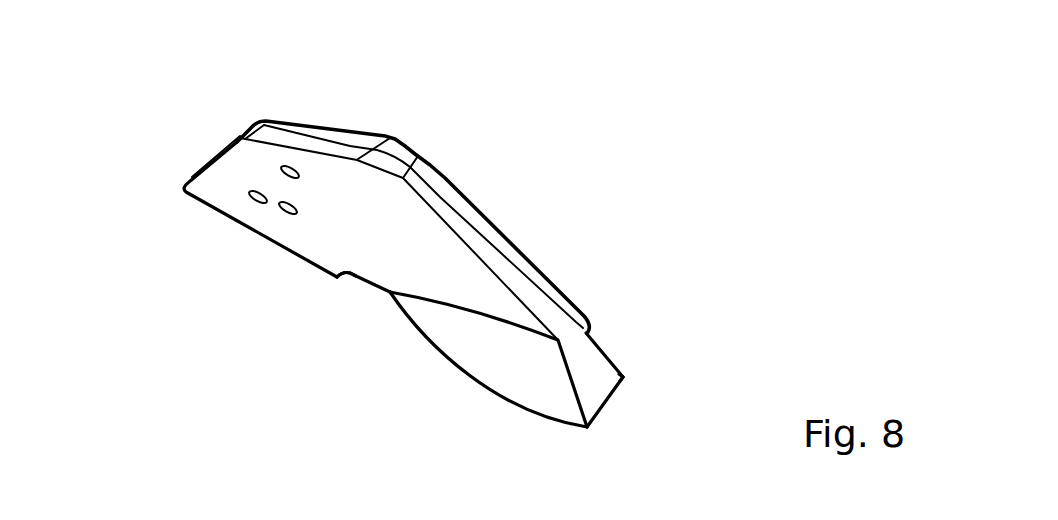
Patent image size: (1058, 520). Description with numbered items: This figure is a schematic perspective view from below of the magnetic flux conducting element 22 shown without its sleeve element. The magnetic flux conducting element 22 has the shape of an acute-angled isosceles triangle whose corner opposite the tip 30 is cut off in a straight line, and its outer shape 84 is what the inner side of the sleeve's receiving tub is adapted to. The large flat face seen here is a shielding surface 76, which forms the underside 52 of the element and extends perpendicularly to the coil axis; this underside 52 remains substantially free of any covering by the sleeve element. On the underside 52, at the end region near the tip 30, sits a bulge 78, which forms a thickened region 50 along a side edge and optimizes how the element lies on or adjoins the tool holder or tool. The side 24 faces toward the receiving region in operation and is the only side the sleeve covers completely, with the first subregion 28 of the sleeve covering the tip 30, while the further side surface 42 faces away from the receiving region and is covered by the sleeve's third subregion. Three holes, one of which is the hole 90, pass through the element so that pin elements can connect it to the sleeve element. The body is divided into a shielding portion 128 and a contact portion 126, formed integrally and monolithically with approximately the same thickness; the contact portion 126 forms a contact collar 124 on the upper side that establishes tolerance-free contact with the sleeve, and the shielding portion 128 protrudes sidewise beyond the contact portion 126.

The magnetic flux conducting element 22 is at (467, 248).
The side 24 is at (609, 405).
The first subregion 28 is at (594, 382).
The tip 30 is at (636, 378).
The further side surface 42 is at (207, 160).
The thickened region 50 is at (461, 365).
The bulge 78 is at (466, 379).
The underside 52 is at (355, 299).
The shielding surface 76 is at (310, 218).
The outer shape 84 is at (490, 188).
The hole 90 is at (258, 208).
The contact collar 124 is at (460, 180).
The contact portion 126 is at (345, 143).
The shielding portion 128 is at (287, 148).